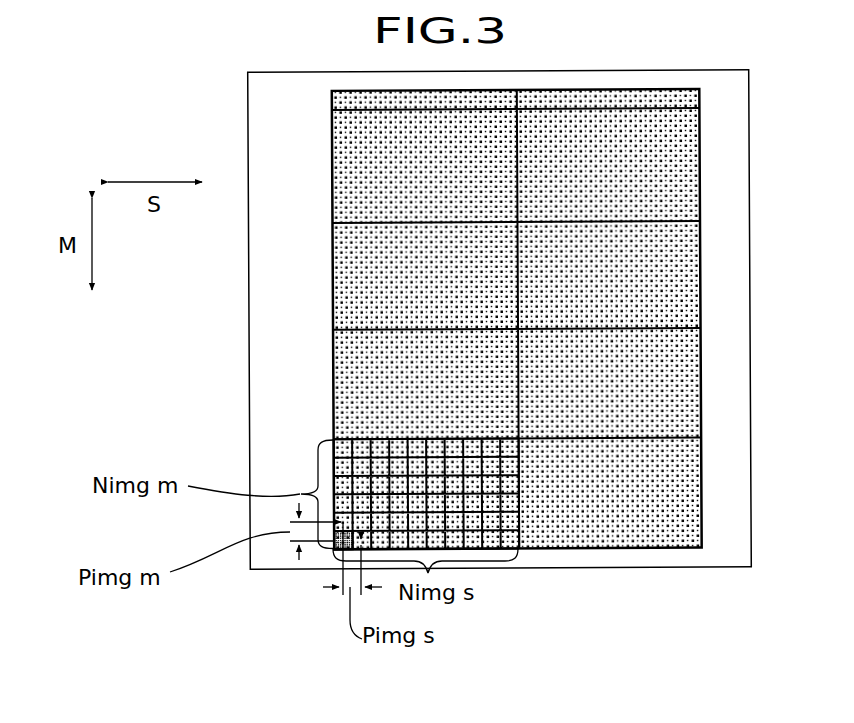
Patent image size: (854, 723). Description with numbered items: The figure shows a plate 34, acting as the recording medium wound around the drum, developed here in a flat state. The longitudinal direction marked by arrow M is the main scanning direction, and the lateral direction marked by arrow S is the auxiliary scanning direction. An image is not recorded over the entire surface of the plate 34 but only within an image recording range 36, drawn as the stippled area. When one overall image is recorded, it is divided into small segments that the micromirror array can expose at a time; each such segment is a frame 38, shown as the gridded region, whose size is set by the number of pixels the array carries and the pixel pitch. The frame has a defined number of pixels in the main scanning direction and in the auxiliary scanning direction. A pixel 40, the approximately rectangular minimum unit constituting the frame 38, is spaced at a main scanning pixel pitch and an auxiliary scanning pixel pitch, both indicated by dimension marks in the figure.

The plate 34 is at (249, 82).
The image recording range 36 is at (347, 92).
The frame 38 is at (363, 438).
The pixel 40 is at (330, 552).